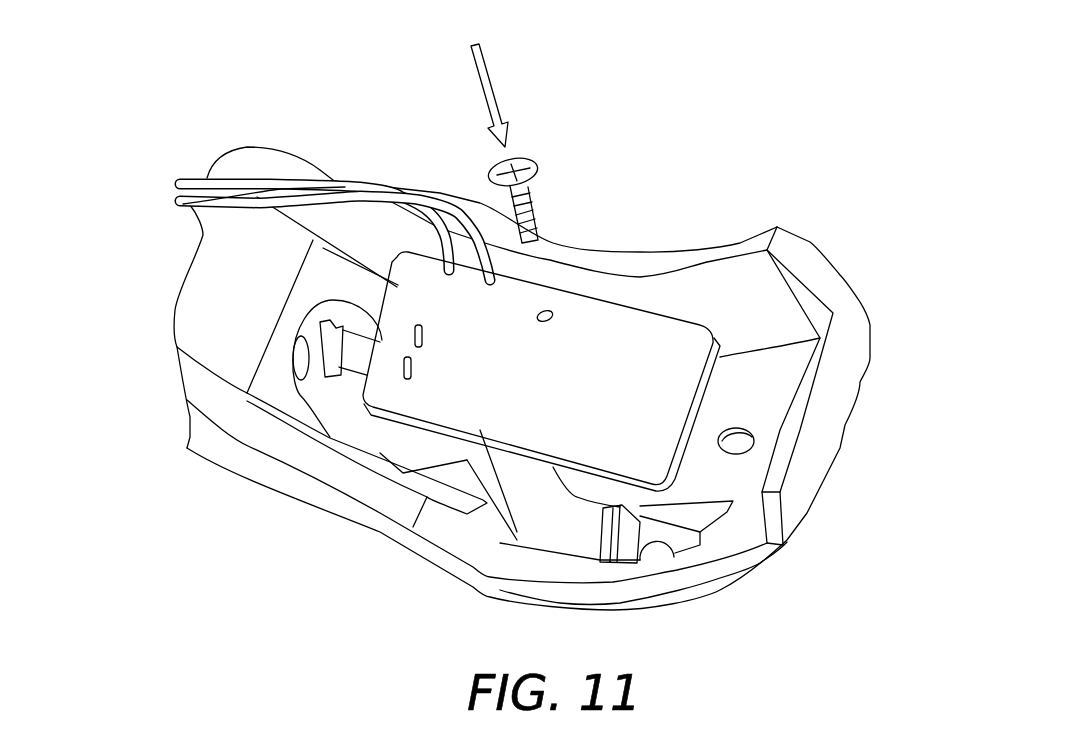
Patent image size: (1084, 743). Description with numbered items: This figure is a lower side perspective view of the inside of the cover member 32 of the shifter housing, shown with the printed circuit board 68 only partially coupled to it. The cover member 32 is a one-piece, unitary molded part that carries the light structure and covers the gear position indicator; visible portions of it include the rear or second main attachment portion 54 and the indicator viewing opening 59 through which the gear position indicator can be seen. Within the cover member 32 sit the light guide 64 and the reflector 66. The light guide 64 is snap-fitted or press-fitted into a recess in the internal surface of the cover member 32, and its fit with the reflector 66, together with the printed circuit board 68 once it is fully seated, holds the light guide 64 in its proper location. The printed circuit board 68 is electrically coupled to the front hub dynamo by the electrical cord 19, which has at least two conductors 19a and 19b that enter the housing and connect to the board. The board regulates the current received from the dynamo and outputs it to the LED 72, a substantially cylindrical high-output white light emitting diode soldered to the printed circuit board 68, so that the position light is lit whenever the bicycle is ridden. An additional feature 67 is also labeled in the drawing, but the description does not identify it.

The electrical cord 19 is at (270, 207).
The conductor 19a is at (178, 181).
The conductor 19b is at (298, 233).
The cover member 32 is at (826, 251).
The second main attachment portion 54 is at (723, 472).
The indicator viewing opening 59 is at (665, 540).
The light guide 64 is at (498, 517).
The reflector 66 is at (272, 387).
The boss 67 is at (297, 338).
The printed circuit board 68 is at (672, 316).
The LED 72 is at (330, 440).